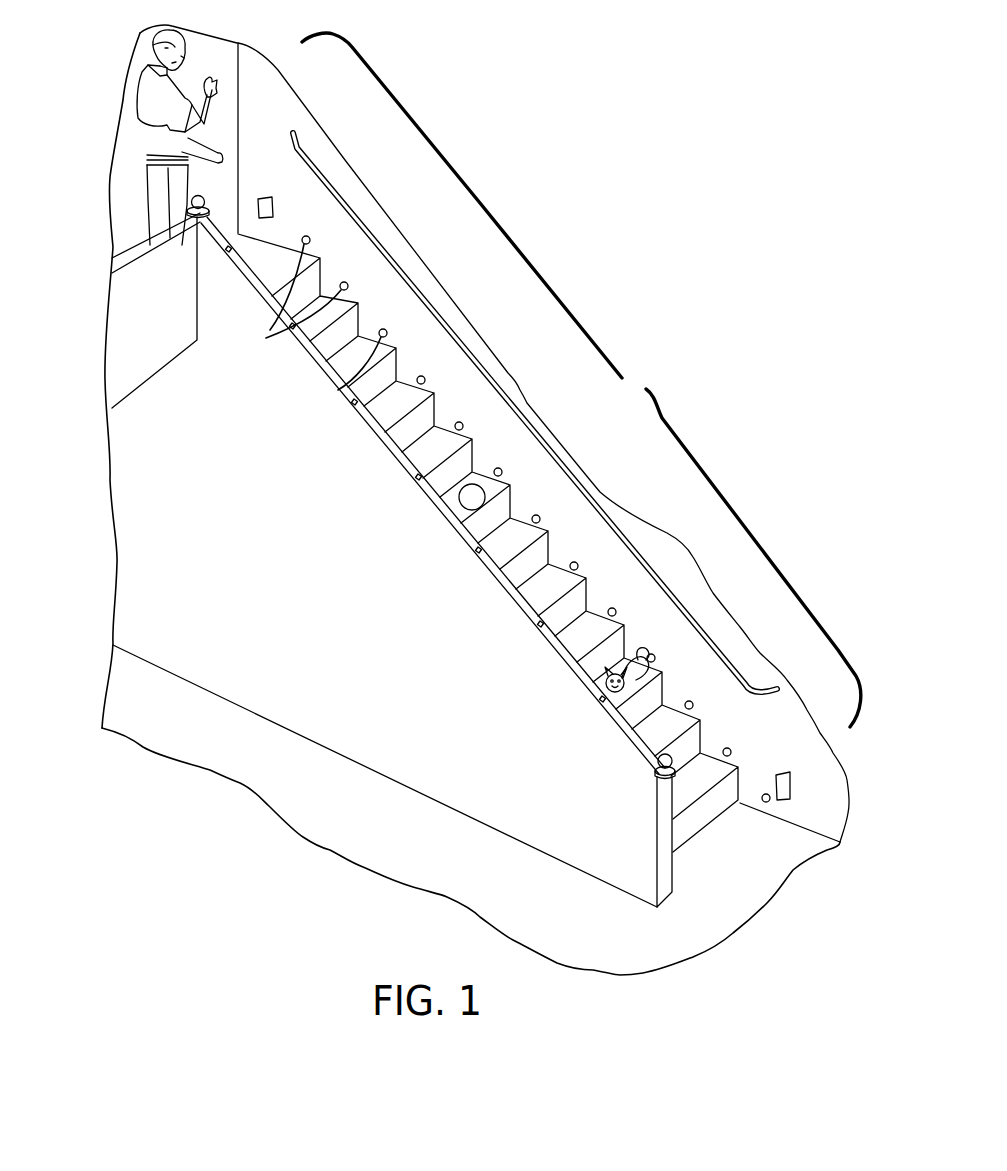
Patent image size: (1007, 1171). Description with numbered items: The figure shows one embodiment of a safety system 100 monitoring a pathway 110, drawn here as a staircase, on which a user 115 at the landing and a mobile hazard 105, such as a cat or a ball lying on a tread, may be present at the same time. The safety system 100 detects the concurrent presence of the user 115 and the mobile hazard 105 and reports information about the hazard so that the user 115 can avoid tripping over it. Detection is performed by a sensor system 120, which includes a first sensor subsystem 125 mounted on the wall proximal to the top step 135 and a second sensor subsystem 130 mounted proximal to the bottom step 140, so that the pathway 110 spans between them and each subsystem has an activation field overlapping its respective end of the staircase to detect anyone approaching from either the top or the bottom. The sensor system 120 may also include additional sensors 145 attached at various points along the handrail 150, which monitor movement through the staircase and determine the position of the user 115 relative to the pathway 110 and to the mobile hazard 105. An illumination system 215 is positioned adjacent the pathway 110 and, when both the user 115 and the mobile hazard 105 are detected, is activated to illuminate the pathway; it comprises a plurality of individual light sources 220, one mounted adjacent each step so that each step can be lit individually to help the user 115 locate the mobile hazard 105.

The safety system 100 is at (662, 178).
The mobile hazard 105 is at (462, 501).
The pathway 110 is at (733, 862).
The user 115 is at (140, 92).
The sensor system 120 is at (622, 378).
The first sensor subsystem 125 is at (265, 197).
The second sensor subsystem 130 is at (787, 773).
The top step 135 is at (246, 254).
The bottom step 140 is at (697, 783).
The additional sensors 145 is at (412, 480).
The handrail 150 is at (207, 226).
The illumination system 215 is at (210, 316).
The light sources 220 is at (276, 332).